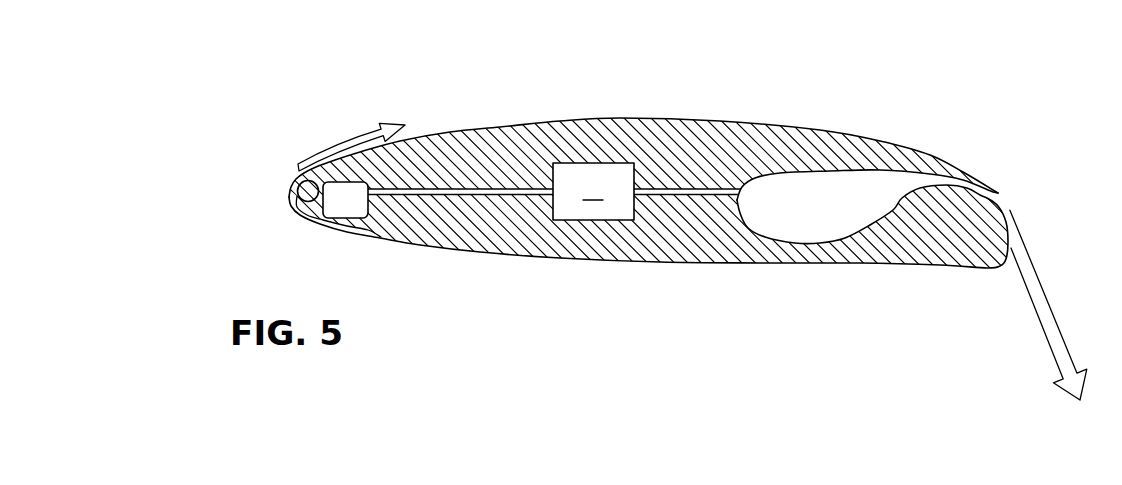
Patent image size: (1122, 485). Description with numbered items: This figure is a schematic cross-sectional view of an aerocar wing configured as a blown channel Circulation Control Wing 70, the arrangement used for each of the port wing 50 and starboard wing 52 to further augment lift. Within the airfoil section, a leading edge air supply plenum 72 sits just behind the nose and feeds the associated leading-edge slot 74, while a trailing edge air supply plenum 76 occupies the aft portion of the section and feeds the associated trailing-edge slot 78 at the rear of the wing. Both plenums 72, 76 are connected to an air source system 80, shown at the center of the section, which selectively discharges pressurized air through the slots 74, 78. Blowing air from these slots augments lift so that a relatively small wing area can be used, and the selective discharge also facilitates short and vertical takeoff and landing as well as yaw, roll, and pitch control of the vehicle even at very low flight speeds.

The port wing 50 is at (643, 116).
The starboard wing 52 is at (652, 104).
The blown channel Circulation Control Wing 70 is at (912, 122).
The leading edge air supply plenum 72 is at (345, 208).
The leading-edge slot 74 is at (295, 184).
The trailing edge air supply plenum 76 is at (768, 212).
The trailing-edge slot 78 is at (1000, 196).
The air source system 80 is at (593, 191).